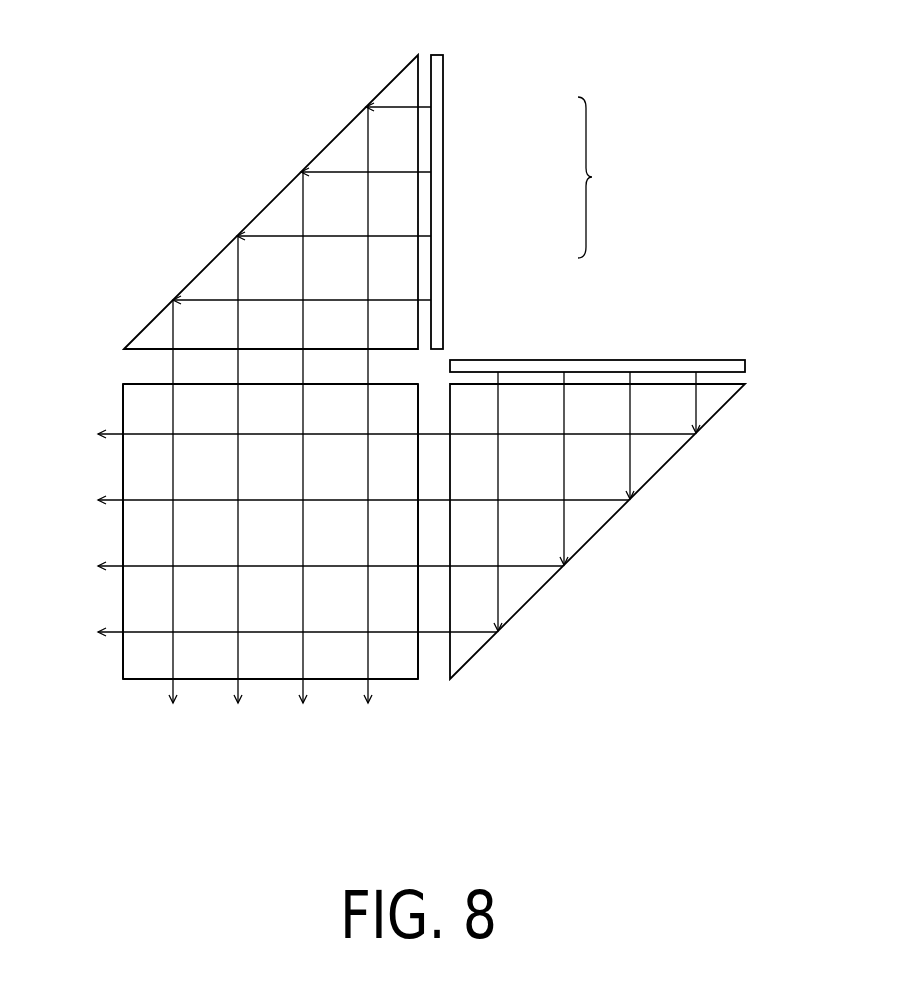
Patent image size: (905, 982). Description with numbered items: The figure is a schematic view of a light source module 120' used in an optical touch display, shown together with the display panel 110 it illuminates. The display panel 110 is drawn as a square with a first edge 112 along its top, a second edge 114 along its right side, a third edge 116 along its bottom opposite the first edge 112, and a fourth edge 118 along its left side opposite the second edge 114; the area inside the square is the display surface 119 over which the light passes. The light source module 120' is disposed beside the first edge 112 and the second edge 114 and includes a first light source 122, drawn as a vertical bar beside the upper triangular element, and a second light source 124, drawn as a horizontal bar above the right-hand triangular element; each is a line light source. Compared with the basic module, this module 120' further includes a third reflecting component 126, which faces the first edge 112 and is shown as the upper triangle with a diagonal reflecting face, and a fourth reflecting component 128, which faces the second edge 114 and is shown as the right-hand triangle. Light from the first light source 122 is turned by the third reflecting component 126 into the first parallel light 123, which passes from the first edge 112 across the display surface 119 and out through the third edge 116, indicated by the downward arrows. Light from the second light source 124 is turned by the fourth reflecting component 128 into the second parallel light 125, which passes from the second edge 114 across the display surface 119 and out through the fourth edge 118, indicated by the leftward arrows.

The display panel 110 is at (410, 676).
The first edge 112 is at (153, 383).
The second edge 114 is at (420, 653).
The third edge 116 is at (147, 680).
The fourth edge 118 is at (123, 403).
The display surface 119 is at (390, 663).
The light source module 120' is at (611, 177).
The first light source 122 is at (443, 97).
The first parallel light 123 is at (403, 107).
The second light source 124 is at (553, 367).
The second parallel light 125 is at (698, 405).
The third reflecting component 126 is at (403, 147).
The fourth reflecting component 128 is at (483, 393).